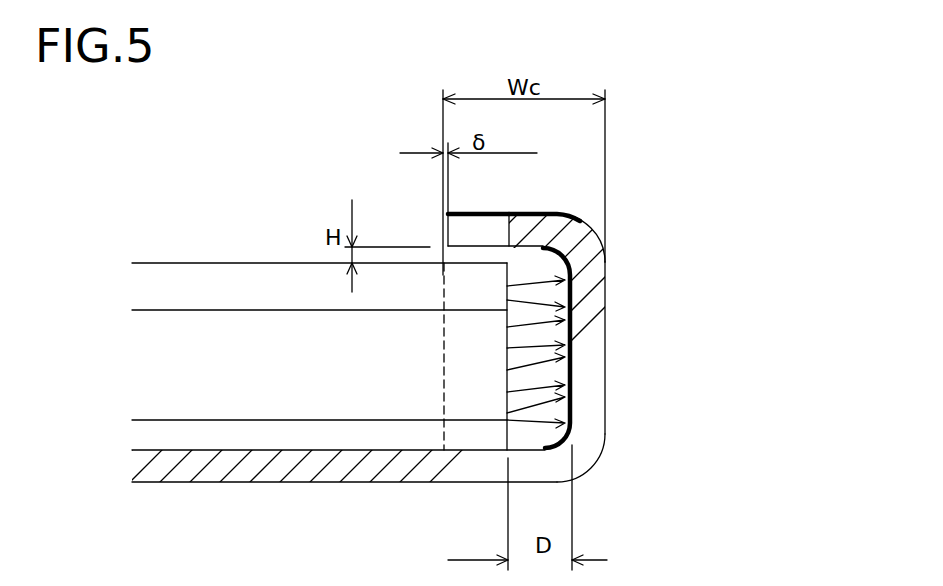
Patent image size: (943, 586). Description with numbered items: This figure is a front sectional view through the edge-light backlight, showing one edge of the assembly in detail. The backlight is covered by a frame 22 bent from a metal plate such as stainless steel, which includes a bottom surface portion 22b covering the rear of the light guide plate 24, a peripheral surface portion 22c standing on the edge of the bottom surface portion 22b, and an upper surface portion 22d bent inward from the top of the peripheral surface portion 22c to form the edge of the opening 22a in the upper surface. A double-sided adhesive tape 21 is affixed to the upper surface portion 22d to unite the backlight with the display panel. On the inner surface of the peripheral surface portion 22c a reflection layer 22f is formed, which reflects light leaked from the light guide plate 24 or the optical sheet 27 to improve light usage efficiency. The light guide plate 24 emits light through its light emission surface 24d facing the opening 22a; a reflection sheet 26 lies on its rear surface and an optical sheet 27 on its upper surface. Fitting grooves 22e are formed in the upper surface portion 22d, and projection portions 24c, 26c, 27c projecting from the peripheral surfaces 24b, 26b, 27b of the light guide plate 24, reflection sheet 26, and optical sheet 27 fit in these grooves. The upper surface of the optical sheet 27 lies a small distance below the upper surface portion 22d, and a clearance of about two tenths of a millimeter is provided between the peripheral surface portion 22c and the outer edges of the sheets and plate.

The double-sided adhesive tape 21 is at (512, 212).
The frame 22 is at (185, 483).
The opening 22a is at (210, 232).
The bottom surface portion 22b is at (240, 470).
The peripheral surface portion 22c is at (605, 343).
The upper surface portion 22d is at (523, 220).
The fitting groove 22e is at (473, 223).
The reflection layer 22f is at (577, 368).
The light guide plate 24 is at (283, 405).
The peripheral surface of light guide plate 24b is at (442, 330).
The projection portion of light guide plate 24c is at (457, 385).
The light emission surface 24d is at (162, 310).
The reflection sheet 26 is at (335, 440).
The peripheral surface of reflection sheet 26b is at (445, 427).
The projection portion of reflection sheet 26c is at (463, 442).
The optical sheet 27 is at (270, 272).
The peripheral surface of optical sheet 27b is at (442, 283).
The projection portion of optical sheet 27c is at (490, 268).